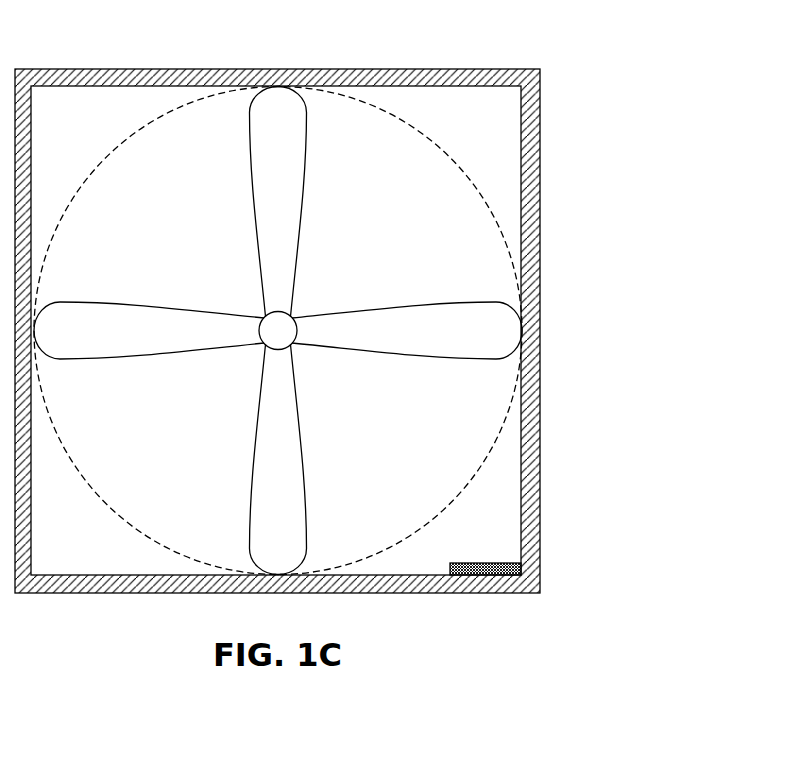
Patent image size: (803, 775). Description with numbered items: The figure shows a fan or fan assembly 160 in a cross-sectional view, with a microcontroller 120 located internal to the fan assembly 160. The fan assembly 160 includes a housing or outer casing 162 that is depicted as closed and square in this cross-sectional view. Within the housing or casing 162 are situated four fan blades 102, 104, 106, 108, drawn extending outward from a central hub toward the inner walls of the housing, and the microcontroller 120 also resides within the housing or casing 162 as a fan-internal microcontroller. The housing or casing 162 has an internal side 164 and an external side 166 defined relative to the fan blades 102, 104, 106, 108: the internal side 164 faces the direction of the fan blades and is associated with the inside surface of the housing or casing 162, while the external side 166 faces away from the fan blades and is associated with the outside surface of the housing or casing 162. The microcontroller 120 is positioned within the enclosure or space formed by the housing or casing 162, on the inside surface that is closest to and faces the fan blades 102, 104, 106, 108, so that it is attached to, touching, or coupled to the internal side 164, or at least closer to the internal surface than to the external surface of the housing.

The fan blade 102 is at (307, 146).
The fan blade 104 is at (77, 302).
The fan blade 106 is at (250, 496).
The fan blade 108 is at (456, 302).
The microcontroller 120 is at (523, 562).
The fan assembly 160 is at (387, 306).
The housing or outer casing 162 is at (530, 438).
The internal side 164 is at (520, 482).
The external side 166 is at (540, 496).